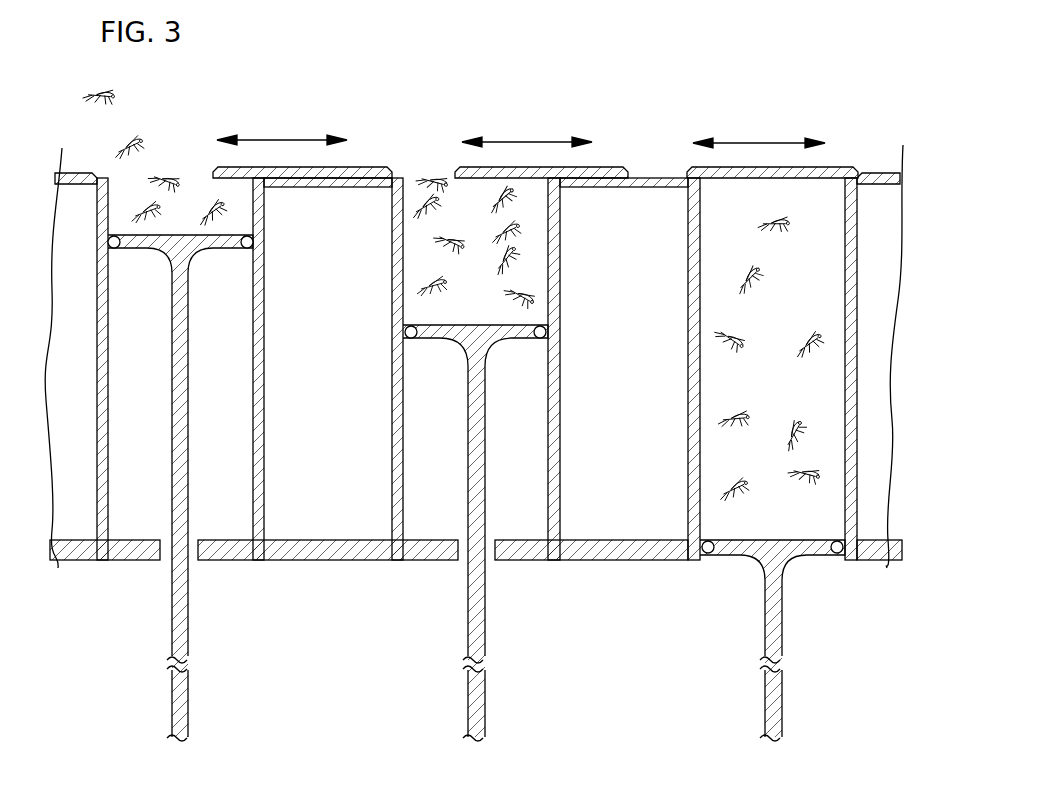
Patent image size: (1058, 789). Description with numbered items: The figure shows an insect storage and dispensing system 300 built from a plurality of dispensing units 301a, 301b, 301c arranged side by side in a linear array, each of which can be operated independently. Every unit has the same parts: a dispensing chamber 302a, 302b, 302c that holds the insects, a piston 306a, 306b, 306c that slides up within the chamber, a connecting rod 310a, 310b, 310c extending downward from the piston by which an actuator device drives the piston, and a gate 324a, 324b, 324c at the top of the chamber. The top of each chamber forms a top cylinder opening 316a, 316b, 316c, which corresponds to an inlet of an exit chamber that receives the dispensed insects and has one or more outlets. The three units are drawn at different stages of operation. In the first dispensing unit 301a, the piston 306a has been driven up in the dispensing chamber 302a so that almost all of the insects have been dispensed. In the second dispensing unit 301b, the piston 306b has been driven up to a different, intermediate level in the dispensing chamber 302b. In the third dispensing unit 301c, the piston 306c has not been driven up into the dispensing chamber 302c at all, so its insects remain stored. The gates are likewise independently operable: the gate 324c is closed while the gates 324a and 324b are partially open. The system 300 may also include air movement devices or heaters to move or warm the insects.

The insect storage and dispensing system 300 is at (668, 82).
The dispensing unit 301a is at (130, 588).
The dispensing unit 301b is at (426, 588).
The dispensing unit 301c is at (724, 588).
The dispensing chamber 302a is at (97, 362).
The dispensing chamber 302b is at (397, 405).
The dispensing chamber 302c is at (857, 362).
The piston 306a is at (200, 240).
The piston 306b is at (420, 333).
The piston 306c is at (725, 548).
The connecting rod 310a is at (170, 695).
The connecting rod 310b is at (467, 695).
The connecting rod 310c is at (765, 695).
The top cylinder opening 316a is at (186, 172).
The top cylinder opening 316b is at (420, 170).
The top cylinder opening 316c is at (742, 185).
The gate 324a is at (353, 167).
The gate 324b is at (610, 167).
The gate 324c is at (844, 167).